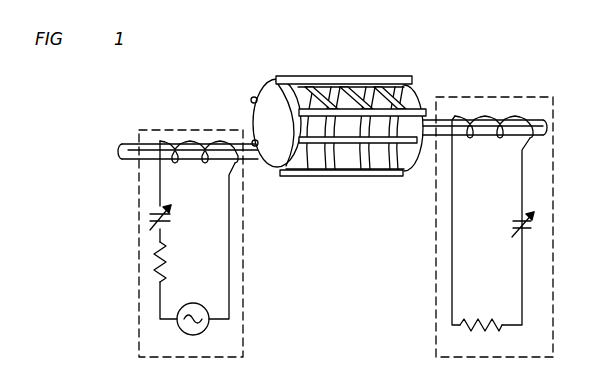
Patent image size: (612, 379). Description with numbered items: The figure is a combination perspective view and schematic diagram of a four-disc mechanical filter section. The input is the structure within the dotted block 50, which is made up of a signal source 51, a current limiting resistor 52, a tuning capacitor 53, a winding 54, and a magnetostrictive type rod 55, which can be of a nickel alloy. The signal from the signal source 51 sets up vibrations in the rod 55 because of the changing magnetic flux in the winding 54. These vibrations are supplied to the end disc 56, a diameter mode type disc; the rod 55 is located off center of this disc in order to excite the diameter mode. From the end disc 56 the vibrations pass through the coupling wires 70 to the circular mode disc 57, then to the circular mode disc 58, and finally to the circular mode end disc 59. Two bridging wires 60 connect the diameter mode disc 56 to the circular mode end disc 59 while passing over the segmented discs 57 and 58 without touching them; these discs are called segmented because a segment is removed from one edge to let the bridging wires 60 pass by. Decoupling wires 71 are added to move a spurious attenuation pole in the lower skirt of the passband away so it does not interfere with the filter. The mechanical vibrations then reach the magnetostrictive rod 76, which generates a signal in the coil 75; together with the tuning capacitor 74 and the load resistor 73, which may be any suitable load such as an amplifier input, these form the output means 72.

The dotted block 50 is at (257, 305).
The signal source 51 is at (205, 332).
The current limiting resistor 52 is at (165, 276).
The tuning capacitor 53 is at (168, 222).
The winding 54 is at (178, 165).
The magnetostrictive type rod 55 is at (128, 143).
The end disc 56 is at (296, 92).
The circular mode disc 57 is at (318, 100).
The circular mode disc 58 is at (345, 167).
The circular mode end disc 59 is at (417, 98).
The bridging wires 60 is at (392, 84).
The coupling wires 70 is at (299, 112).
The decoupling wires 71 is at (254, 140).
The output means 72 is at (436, 310).
The load resistor 73 is at (479, 322).
The tuning capacitor 74 is at (514, 222).
The coil 75 is at (477, 139).
The magnetostrictive rod 76 is at (530, 138).